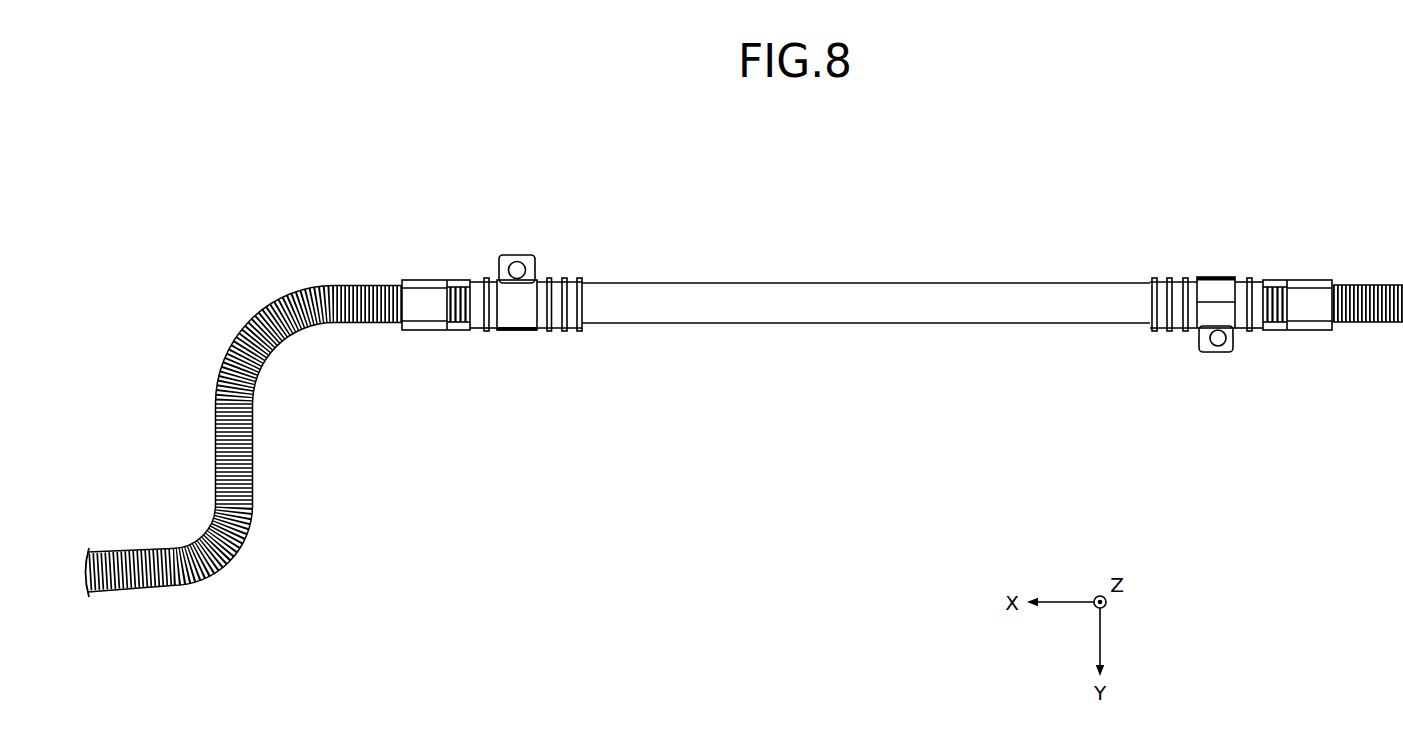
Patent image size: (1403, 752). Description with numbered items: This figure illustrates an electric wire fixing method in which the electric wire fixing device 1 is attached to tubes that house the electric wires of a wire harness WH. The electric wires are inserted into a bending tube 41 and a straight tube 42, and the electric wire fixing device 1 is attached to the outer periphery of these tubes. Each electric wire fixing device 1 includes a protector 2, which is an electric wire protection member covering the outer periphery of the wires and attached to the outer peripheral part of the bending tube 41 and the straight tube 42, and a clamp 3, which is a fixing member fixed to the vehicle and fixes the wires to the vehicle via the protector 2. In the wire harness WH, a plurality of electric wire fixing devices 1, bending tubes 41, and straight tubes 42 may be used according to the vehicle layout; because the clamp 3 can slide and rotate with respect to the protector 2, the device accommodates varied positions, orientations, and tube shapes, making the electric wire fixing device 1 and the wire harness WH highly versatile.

The electric wire fixing device 1 is at (484, 254).
The protector 2 is at (455, 330).
The clamp 3 is at (515, 331).
The bending tube 41 is at (252, 516).
The straight tube 42 is at (765, 324).
The wire harness WH is at (1004, 213).